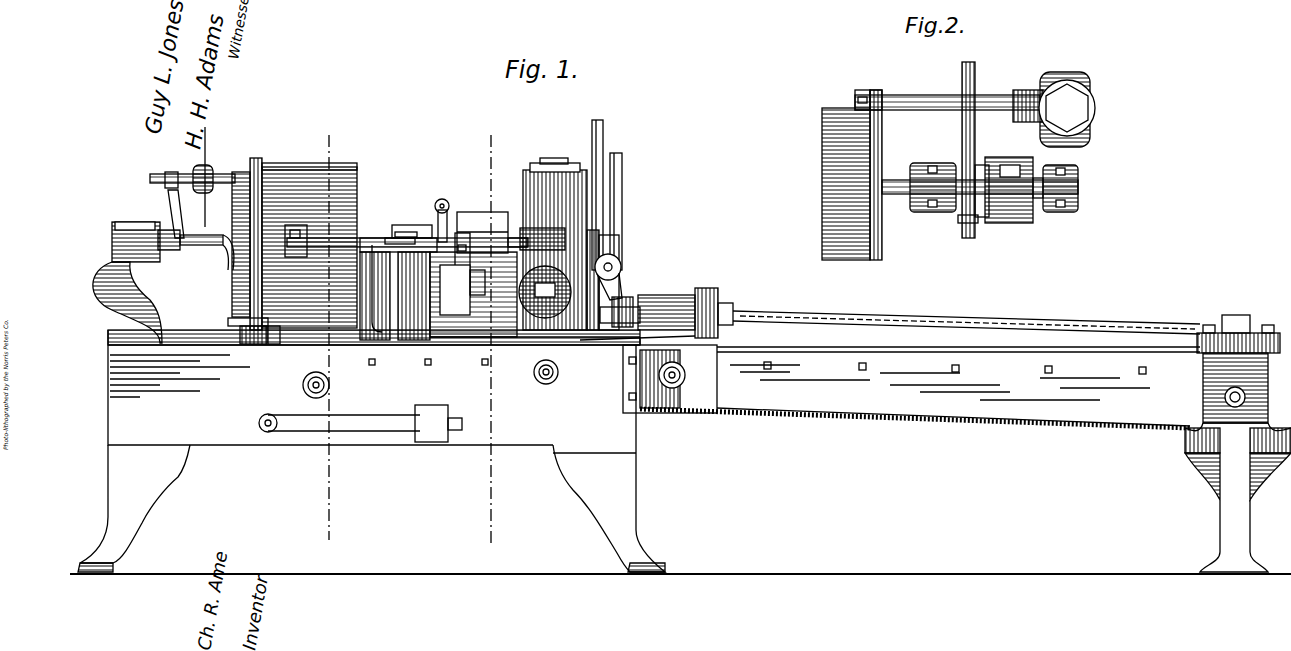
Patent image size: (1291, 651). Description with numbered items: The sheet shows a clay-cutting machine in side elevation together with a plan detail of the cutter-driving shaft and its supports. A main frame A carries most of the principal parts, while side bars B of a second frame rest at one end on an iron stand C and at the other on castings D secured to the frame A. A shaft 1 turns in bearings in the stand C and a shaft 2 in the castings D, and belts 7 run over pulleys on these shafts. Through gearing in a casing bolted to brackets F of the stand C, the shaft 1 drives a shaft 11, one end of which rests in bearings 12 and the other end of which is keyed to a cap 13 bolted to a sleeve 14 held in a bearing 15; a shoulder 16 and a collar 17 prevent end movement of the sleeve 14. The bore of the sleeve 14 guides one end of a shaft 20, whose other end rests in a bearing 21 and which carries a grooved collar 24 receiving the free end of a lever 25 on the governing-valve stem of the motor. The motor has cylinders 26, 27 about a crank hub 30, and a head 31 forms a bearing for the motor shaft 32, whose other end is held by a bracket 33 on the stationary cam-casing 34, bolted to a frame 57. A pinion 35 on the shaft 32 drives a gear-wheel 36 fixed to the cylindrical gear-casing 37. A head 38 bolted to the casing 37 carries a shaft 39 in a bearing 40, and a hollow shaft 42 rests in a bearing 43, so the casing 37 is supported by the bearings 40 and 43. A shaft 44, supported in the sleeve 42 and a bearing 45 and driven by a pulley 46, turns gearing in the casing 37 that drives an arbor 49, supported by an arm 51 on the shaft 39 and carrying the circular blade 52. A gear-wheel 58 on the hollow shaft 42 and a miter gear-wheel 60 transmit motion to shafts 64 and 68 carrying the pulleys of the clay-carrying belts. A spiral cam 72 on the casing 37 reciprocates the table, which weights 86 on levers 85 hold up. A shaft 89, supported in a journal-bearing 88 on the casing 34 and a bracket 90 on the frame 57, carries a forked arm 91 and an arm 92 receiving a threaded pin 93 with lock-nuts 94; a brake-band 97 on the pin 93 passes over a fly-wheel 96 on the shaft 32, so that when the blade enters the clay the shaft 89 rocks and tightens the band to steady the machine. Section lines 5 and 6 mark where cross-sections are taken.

In FIG. 1, the shaft 1 is at (1255, 390).
In FIG. 1, the shaft 2 is at (682, 368).
In FIG. 1, the section line 5 is at (491, 331).
In FIG. 1, the section line 6 is at (325, 329).
In FIG. 1, the belts 7 is at (1090, 428).
In FIG. 1, the shaft 11 is at (1100, 326).
In FIG. 1, the bearings 12 is at (1210, 333).
In FIG. 1, the cap 13 is at (727, 303).
In FIG. 1, the sleeve 14 is at (709, 282).
In FIG. 1, the bearing 15 is at (668, 295).
In FIG. 1, the shoulder 16 is at (555, 244).
In FIG. 1, the collar 17 is at (629, 299).
In FIG. 1, the shaft 20 is at (530, 332).
In FIG. 1, the bearing 21 is at (473, 294).
In FIG. 1, the grooved collar 24 is at (612, 320).
In FIG. 1, the lever 25 is at (622, 273).
In FIG. 2, the cylinder 26 is at (1075, 125).
In FIG. 1, the cylinder 27 is at (545, 289).
In FIG. 1, the hub or casing 30 is at (570, 248).
In FIG. 2, the head 31 is at (1025, 95).
In FIG. 2, the motor shaft 32 is at (932, 88).
In FIG. 2, the bracket 33 is at (862, 90).
In FIG. 1, the cam-casing 34 is at (278, 244).
In FIG. 2, the cam-casing 34 is at (846, 184).
In FIG. 2, the pinion 35 is at (878, 90).
In FIG. 1, the gear-wheel 36 is at (375, 250).
In FIG. 2, the gear-wheel 36 is at (886, 175).
In FIG. 1, the gear-casing 37 is at (309, 245).
In FIG. 1, the head 38 is at (240, 283).
In FIG. 1, the shaft 39 is at (200, 245).
In FIG. 1, the bearing 40 is at (112, 240).
In FIG. 1, the hollow shaft 42 is at (392, 238).
In FIG. 2, the hollow shaft 42 is at (897, 194).
In FIG. 1, the bearing 43 is at (412, 232).
In FIG. 2, the bearing 43 is at (936, 158).
In FIG. 1, the shaft 44 is at (512, 238).
In FIG. 2, the shaft 44 is at (1038, 198).
In FIG. 1, the bearing 45 is at (540, 228).
In FIG. 2, the bearing 45 is at (1078, 185).
In FIG. 1, the pulley 46 is at (482, 232).
In FIG. 2, the pulley 46 is at (1009, 190).
In FIG. 1, the arbor 49 is at (222, 185).
In FIG. 1, the arm 51 is at (186, 212).
In FIG. 1, the circular blade 52 is at (208, 160).
In FIG. 1, the frame 57 is at (416, 301).
In FIG. 2, the gear-wheel 58 is at (962, 223).
In FIG. 1, the miter gear-wheel 60 is at (410, 225).
In FIG. 1, the shaft 64 is at (330, 385).
In FIG. 1, the shaft 68 is at (558, 372).
In FIG. 1, the spiral cam 72 is at (258, 165).
In FIG. 1, the arm or lever 85 is at (375, 408).
In FIG. 1, the weight 86 is at (438, 423).
In FIG. 1, the journal-bearing 88 is at (407, 220).
In FIG. 1, the shaft 89 is at (380, 230).
In FIG. 1, the bracket 90 is at (483, 282).
In FIG. 1, the arm 91 is at (282, 223).
In FIG. 1, the arm 92 is at (438, 218).
In FIG. 1, the screw-threaded pin 93 is at (278, 344).
In FIG. 1, the lock-nuts 94 is at (449, 203).
In FIG. 2, the fly-wheel 96 is at (975, 75).
In FIG. 2, the brake-band 97 is at (978, 160).
In FIG. 1, the frame A is at (371, 451).
In FIG. 1, the side bars B is at (958, 386).
In FIG. 1, the iron stand C is at (1185, 480).
In FIG. 1, the castings D is at (670, 379).
In FIG. 1, the brackets F is at (1195, 463).